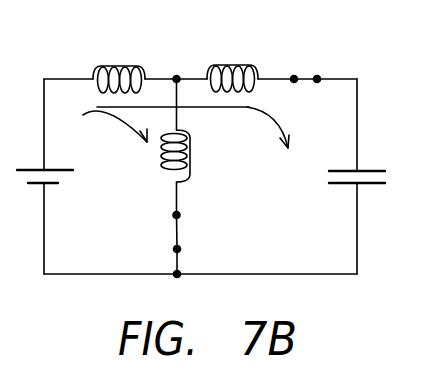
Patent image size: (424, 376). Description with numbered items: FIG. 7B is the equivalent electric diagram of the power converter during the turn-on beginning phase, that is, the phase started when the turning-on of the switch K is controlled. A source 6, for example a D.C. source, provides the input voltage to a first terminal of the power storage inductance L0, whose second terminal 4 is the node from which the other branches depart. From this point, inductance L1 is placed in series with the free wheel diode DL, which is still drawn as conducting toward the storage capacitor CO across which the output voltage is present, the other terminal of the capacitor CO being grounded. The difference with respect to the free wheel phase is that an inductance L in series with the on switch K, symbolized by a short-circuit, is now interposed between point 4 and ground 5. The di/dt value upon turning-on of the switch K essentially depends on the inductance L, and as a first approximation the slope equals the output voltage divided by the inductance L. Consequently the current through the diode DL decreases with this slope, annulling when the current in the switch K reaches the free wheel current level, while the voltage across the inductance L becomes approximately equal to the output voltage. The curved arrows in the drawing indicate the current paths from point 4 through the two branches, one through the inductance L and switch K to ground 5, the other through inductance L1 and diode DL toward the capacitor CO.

The second terminal 4 is at (176, 77).
The reference terminal 5 is at (43, 275).
The source 6 is at (59, 172).
The power storage inductance L0 is at (119, 66).
The inductance L1 is at (232, 65).
The free wheel diode DL is at (306, 68).
The storage capacitor CO is at (356, 163).
The inductance L is at (186, 156).
The switch K is at (186, 230).